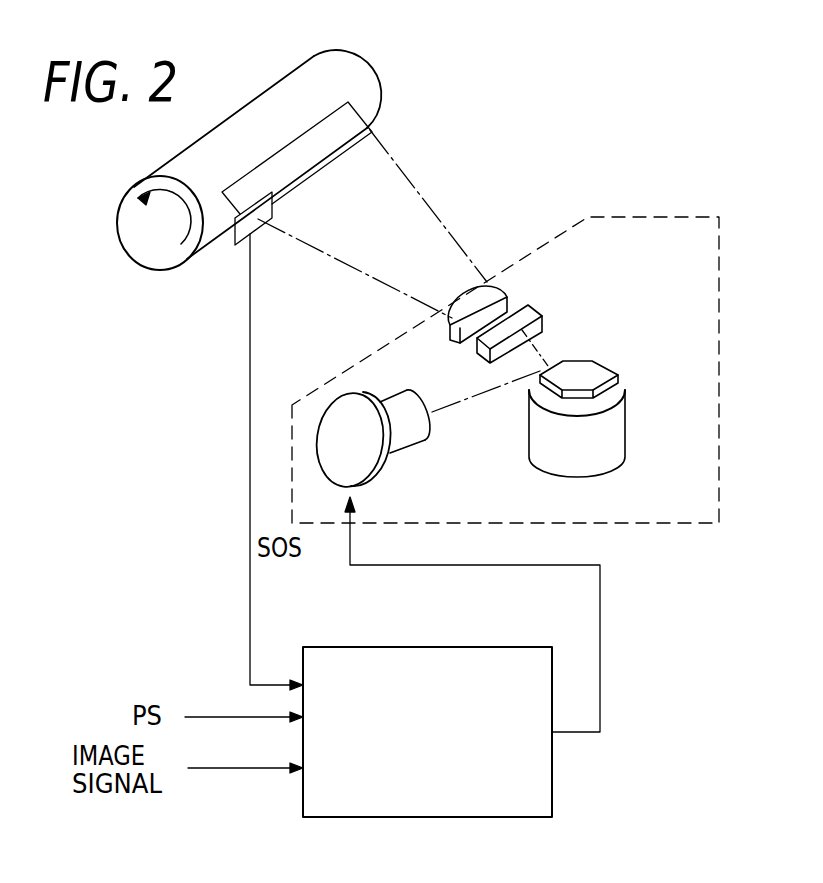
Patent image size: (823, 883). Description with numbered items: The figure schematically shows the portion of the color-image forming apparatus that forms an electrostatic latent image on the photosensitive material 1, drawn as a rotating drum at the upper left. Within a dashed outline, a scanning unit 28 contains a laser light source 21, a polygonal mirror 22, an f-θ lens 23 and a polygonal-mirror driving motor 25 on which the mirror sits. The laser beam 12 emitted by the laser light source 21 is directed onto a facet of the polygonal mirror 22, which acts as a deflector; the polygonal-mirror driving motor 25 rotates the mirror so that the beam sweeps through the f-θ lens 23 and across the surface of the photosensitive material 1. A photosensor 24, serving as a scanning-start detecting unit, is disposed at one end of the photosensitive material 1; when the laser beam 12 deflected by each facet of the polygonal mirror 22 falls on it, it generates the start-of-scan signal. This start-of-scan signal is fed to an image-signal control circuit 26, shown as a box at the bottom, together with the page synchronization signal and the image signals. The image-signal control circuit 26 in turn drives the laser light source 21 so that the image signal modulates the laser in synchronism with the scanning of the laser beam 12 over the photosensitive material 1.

The photosensitive material 1 is at (388, 95).
The laser beam 12 is at (378, 266).
The laser light source 21 is at (380, 478).
The polygonal mirror 22 is at (603, 363).
The f-θ lens 23 is at (498, 290).
The photosensor 24 is at (258, 223).
The polygonal-mirror driving motor 25 is at (626, 433).
The image-signal control circuit 26 is at (503, 646).
The scanning unit 28 is at (718, 300).